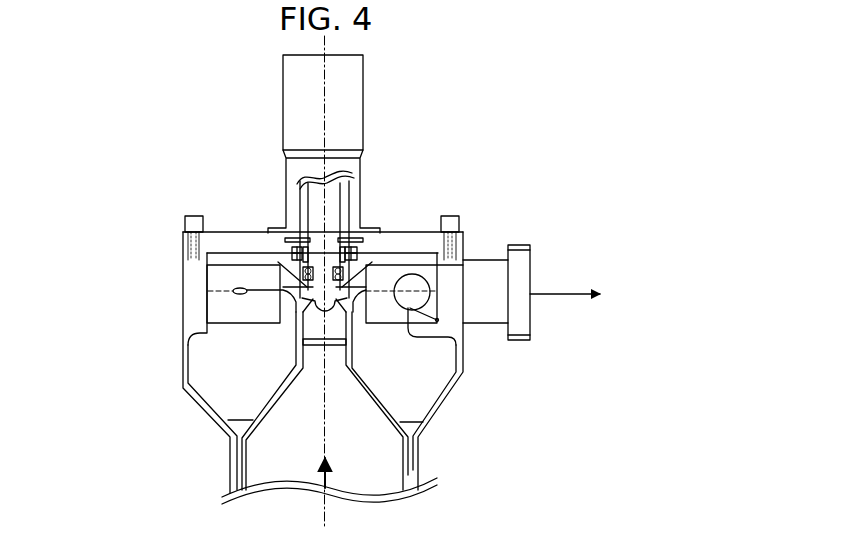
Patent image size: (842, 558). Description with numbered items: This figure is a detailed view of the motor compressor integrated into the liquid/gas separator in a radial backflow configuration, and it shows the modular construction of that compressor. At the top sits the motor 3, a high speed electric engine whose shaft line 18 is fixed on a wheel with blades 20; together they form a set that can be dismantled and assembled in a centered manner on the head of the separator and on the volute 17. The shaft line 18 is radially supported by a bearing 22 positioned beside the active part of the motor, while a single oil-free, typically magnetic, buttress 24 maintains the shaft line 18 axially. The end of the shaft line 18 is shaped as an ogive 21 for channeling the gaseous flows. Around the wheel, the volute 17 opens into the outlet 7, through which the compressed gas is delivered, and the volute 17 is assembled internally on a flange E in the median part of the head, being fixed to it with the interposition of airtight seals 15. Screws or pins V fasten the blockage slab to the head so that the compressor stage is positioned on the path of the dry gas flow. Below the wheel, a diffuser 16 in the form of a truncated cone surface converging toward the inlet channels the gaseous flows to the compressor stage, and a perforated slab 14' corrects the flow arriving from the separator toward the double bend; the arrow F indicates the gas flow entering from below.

The motor 3 is at (262, 123).
The shaft line 18 is at (315, 218).
The wheel with blades 20 is at (207, 248).
The screws or pins V is at (450, 212).
The buttress 24 is at (352, 240).
The bearing 22 is at (364, 252).
The airtight seals 15 is at (207, 322).
The flange E is at (220, 333).
The volute 17 is at (439, 321).
The outlet 7 is at (520, 238).
The ogive 21 is at (348, 332).
The perforated slab 14' is at (227, 373).
The diffuser 16 is at (377, 400).
The flow direction F is at (327, 472).